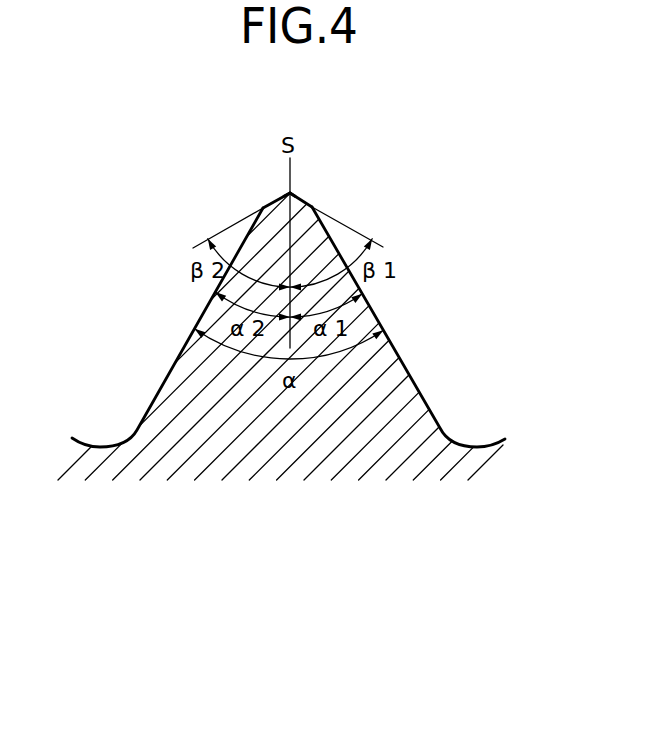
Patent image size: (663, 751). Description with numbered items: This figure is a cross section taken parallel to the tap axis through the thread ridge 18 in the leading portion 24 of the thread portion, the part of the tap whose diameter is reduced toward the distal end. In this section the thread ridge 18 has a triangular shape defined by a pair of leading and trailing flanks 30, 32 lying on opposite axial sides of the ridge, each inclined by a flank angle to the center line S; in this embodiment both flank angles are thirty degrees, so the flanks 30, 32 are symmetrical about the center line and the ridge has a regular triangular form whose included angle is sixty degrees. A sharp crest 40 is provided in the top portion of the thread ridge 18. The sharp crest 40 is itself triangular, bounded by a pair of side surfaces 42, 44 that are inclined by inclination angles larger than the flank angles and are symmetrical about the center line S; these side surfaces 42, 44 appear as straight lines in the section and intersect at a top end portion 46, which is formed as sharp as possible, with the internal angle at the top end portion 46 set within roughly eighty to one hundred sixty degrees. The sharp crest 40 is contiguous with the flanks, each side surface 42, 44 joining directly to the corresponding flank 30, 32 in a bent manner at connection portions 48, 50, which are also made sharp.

The thread ridge 18 is at (281, 286).
The leading portion 24 is at (281, 286).
The leading flank 30 is at (398, 353).
The trailing flank 32 is at (182, 353).
The sharp crest 40 is at (288, 170).
The side surface 42 is at (303, 198).
The side surface 44 is at (277, 198).
The top end portion 46 is at (291, 191).
The connection portion 48 is at (313, 207).
The connection portion 50 is at (264, 207).